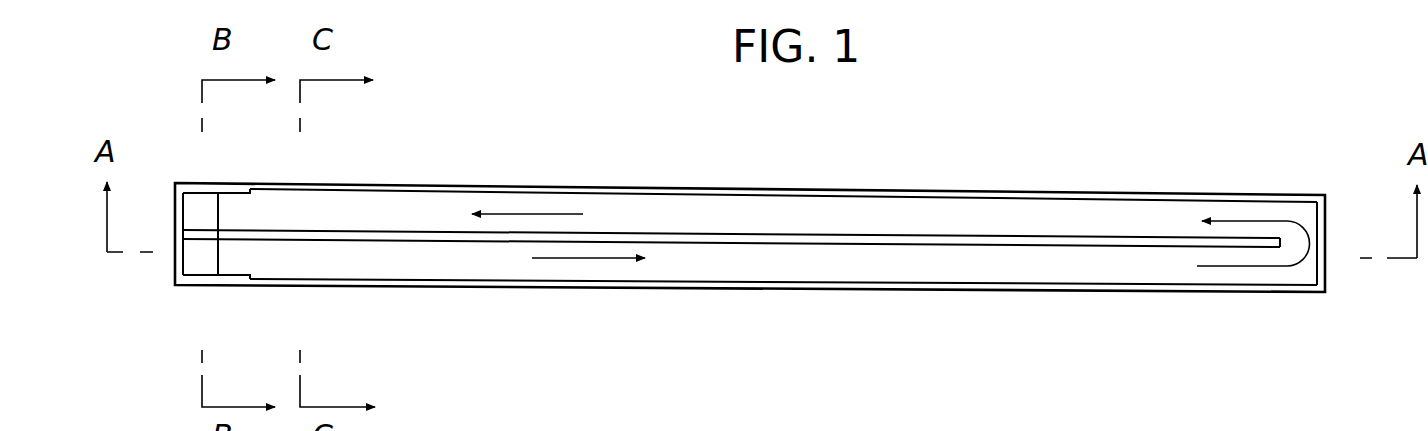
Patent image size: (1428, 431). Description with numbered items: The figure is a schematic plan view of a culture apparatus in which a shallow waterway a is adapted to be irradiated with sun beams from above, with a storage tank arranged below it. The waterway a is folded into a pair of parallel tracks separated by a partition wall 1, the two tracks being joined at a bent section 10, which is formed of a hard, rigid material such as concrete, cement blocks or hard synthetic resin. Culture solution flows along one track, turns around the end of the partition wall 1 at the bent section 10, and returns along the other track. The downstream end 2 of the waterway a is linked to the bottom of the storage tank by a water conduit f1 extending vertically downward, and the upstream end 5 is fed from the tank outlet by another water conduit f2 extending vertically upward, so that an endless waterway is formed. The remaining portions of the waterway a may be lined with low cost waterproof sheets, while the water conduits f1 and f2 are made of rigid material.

The partition wall 1 is at (932, 236).
The downstream end 2 is at (232, 203).
The upstream end 5 is at (227, 260).
The bent section 10 is at (1327, 282).
The shallow waterway a is at (860, 191).
The water conduit f1 is at (193, 203).
The water conduit f2 is at (198, 253).